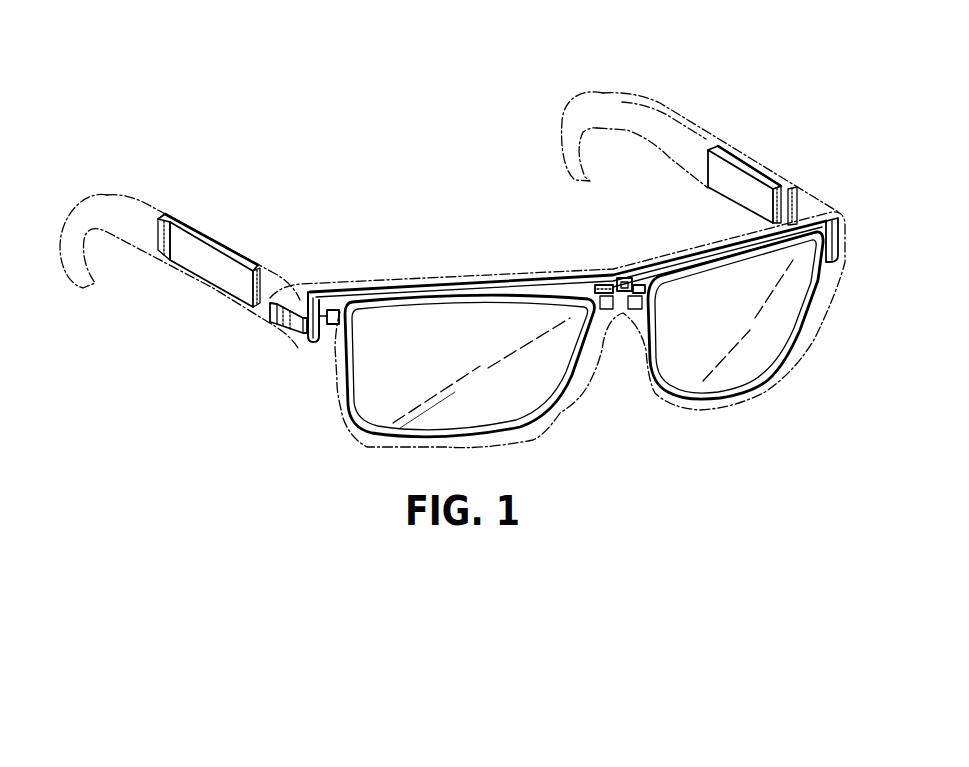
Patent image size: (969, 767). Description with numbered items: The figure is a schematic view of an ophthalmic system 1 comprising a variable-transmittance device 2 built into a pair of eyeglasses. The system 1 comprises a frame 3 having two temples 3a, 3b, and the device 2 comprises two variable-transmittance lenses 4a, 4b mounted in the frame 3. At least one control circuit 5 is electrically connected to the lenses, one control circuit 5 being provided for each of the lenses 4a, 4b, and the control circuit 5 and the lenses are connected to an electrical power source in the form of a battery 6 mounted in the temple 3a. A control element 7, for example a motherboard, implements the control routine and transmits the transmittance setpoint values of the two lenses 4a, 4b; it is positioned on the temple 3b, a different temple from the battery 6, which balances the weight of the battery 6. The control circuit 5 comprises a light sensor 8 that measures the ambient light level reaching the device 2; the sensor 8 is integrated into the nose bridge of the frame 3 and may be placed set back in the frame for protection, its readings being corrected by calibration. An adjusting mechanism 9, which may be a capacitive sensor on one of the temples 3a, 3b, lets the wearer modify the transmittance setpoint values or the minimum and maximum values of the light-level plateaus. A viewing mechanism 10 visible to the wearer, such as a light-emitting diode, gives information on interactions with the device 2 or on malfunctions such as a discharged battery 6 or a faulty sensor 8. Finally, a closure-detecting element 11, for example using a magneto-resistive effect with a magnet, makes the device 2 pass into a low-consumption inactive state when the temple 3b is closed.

The system 1 is at (745, 83).
The variable-transmittance device 2 is at (632, 397).
The frame 3 is at (688, 150).
The temple 3a is at (602, 112).
The temple 3b is at (138, 231).
The variable-transmittance lens 4a is at (533, 380).
The variable-transmittance lens 4b is at (763, 330).
The control circuit 5 is at (606, 286).
The battery 6 is at (753, 193).
The control element 7 is at (205, 237).
The light sensor 8 is at (624, 279).
The adjusting mechanism 9 is at (233, 280).
The viewing mechanism 10 is at (331, 320).
The closure-detecting element 11 is at (285, 324).